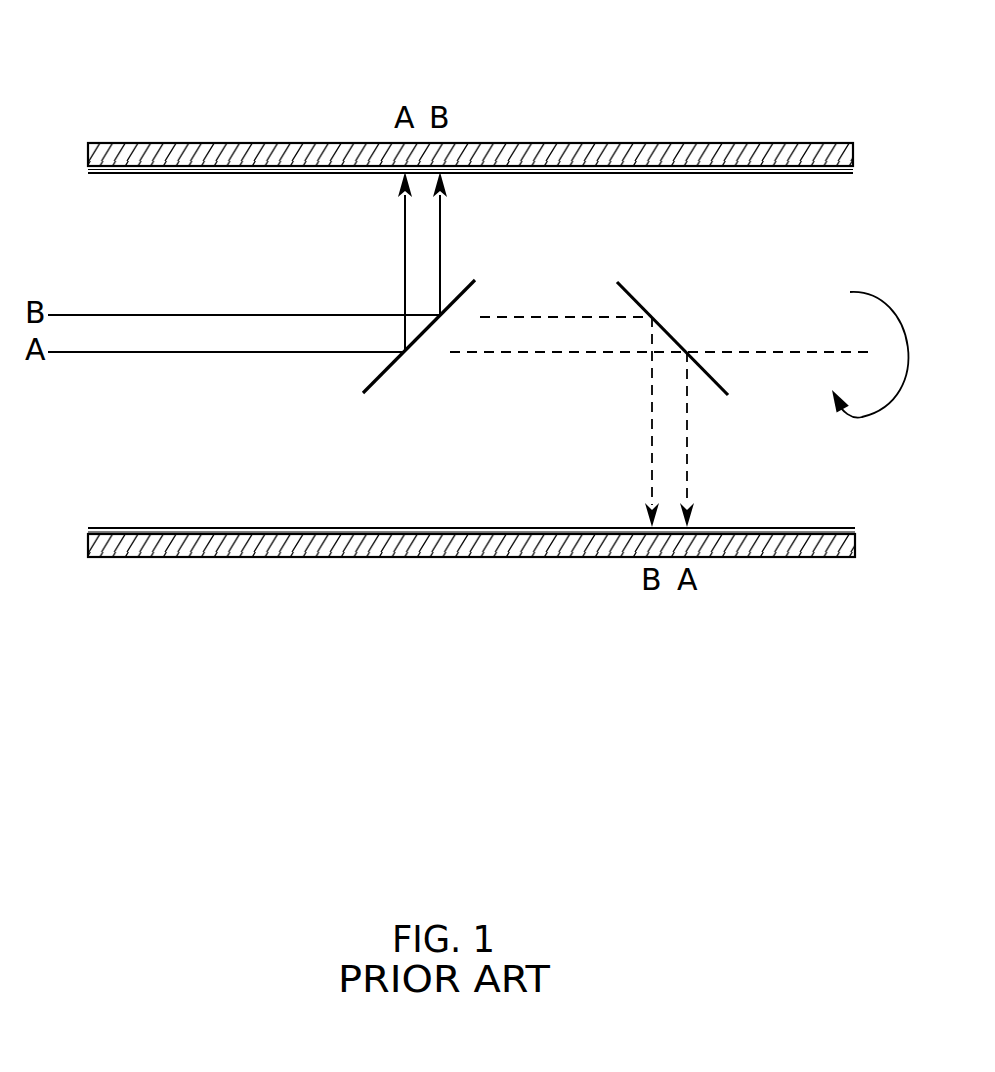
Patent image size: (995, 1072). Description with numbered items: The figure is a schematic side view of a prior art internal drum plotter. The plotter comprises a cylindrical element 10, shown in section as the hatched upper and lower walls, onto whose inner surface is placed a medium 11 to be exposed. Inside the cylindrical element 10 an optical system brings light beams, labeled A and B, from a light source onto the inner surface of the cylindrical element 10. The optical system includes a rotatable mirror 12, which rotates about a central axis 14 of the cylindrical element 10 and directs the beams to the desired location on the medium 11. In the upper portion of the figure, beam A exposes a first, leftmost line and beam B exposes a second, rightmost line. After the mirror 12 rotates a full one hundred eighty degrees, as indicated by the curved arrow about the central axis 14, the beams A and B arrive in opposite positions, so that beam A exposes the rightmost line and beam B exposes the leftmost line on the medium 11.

The cylindrical element 10 is at (843, 144).
The medium 11 is at (797, 172).
The rotatable mirror 12 is at (380, 377).
The central axis 14 is at (777, 352).